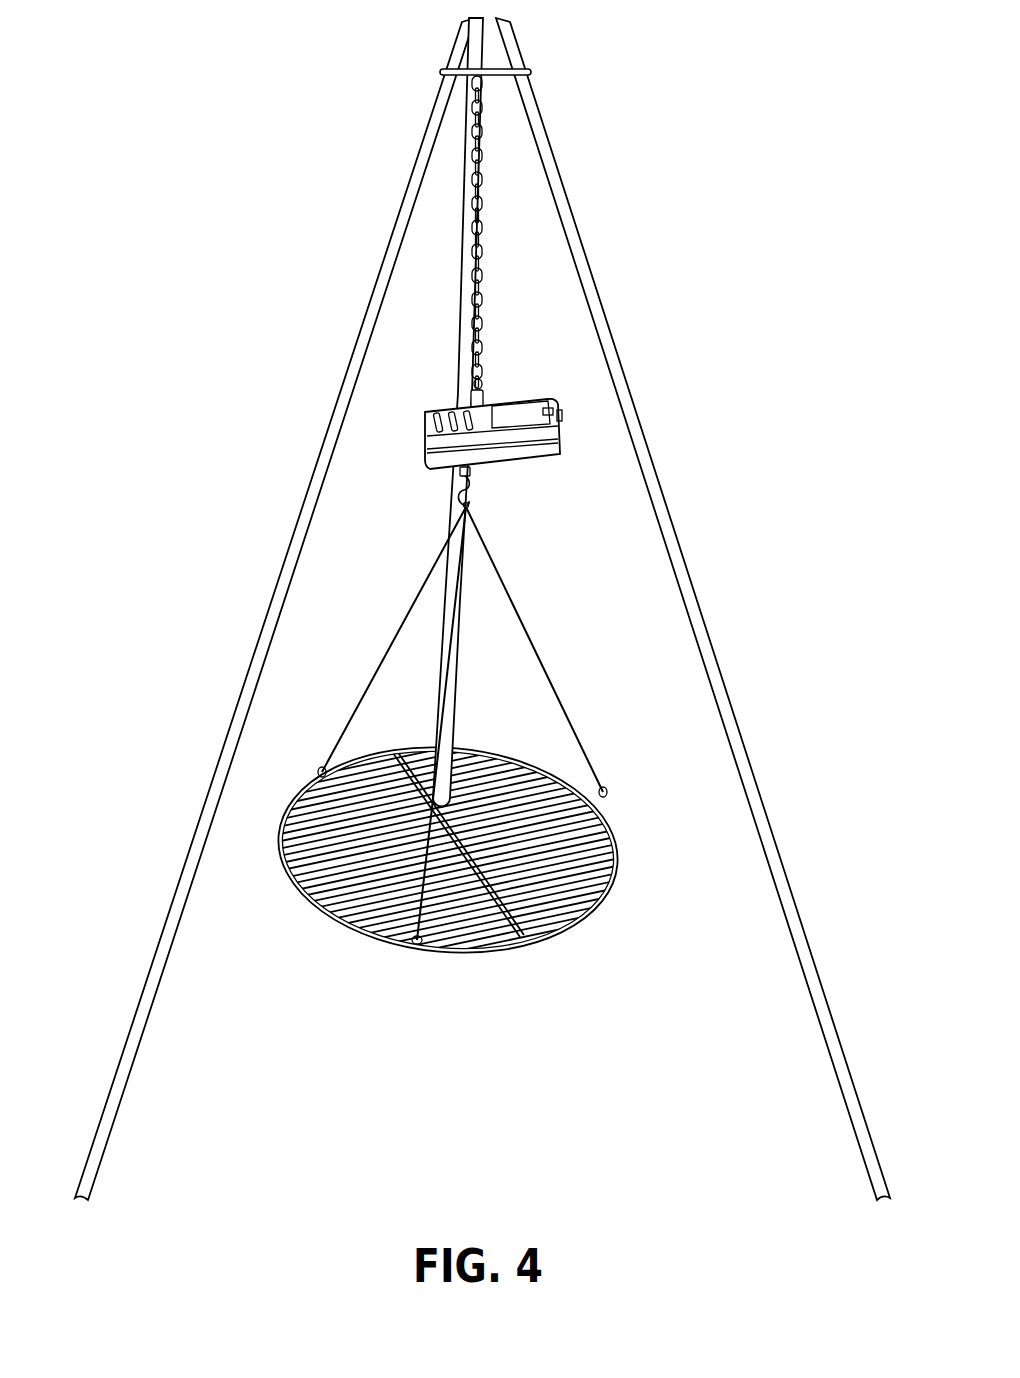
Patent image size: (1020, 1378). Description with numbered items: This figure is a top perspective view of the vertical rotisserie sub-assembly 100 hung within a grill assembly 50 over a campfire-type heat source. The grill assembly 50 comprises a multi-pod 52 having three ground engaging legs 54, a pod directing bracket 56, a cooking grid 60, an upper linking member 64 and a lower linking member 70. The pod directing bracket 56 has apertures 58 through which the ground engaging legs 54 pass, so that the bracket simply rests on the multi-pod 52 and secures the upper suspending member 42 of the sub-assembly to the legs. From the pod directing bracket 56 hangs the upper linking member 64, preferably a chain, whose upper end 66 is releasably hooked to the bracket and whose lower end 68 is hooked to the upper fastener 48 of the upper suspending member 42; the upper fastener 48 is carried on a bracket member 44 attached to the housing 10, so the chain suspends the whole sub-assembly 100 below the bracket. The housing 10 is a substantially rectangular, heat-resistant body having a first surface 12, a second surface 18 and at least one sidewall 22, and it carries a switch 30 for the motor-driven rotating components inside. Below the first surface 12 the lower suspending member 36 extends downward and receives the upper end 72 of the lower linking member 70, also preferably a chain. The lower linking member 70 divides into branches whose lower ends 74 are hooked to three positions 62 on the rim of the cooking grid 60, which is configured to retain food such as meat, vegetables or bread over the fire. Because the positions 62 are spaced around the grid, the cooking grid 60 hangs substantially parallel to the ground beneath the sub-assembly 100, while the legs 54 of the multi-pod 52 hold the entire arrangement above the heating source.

The housing 10 is at (517, 414).
The first surface 12 is at (524, 453).
The second surface 18 is at (527, 406).
The sidewall 22 is at (560, 434).
The switch 30 is at (561, 412).
The lower suspending member 36 is at (449, 504).
The upper suspending member 42 is at (513, 248).
The bracket member 44 is at (485, 397).
The upper fastener 48 is at (483, 386).
The grill assembly 50 is at (482, 609).
The multi-pod 52 is at (482, 609).
The ground engaging leg 54 is at (464, 272).
The pod directing bracket 56 is at (487, 68).
The aperture 58 is at (480, 72).
The cooking grid 60 is at (618, 848).
The position 62 is at (320, 773).
The upper linking member 64 is at (497, 232).
The upper end 66 is at (483, 80).
The lower end 68 is at (478, 352).
The lower linking member 70 is at (469, 759).
The upper end 72 is at (470, 508).
The lower end 74 is at (469, 833).
The vertical rotisserie sub-assembly 100 is at (488, 406).